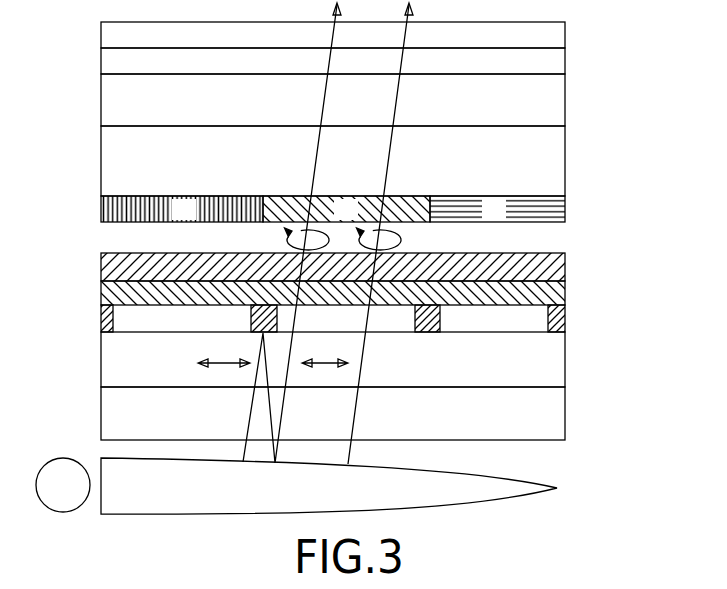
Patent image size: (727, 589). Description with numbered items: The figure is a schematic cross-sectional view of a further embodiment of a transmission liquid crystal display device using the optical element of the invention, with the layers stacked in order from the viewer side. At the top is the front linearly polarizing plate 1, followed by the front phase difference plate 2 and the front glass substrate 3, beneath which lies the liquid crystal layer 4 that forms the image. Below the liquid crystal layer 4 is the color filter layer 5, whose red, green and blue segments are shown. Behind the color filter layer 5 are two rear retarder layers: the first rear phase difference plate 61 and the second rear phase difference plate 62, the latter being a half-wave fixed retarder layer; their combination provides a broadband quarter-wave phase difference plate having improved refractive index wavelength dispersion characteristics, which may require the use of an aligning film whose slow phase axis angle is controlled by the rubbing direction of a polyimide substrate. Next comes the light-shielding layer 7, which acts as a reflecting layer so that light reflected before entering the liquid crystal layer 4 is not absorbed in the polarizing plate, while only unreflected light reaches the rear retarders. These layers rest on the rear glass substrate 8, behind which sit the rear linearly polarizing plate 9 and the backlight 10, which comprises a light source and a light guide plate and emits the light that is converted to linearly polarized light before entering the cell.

The front linearly polarizing plate 1 is at (565, 42).
The front phase difference plate 2 is at (565, 68).
The front glass substrate 3 is at (565, 107).
The liquid crystal layer 4 is at (565, 162).
The color filter layer 5 is at (565, 207).
The first rear phase difference plate 61 is at (565, 266).
The second rear phase difference plate 62 is at (565, 295).
The light-shielding layer 7 is at (565, 318).
The rear glass substrate 8 is at (565, 353).
The rear linearly polarizing plate 9 is at (565, 408).
The backlight 10 is at (557, 488).